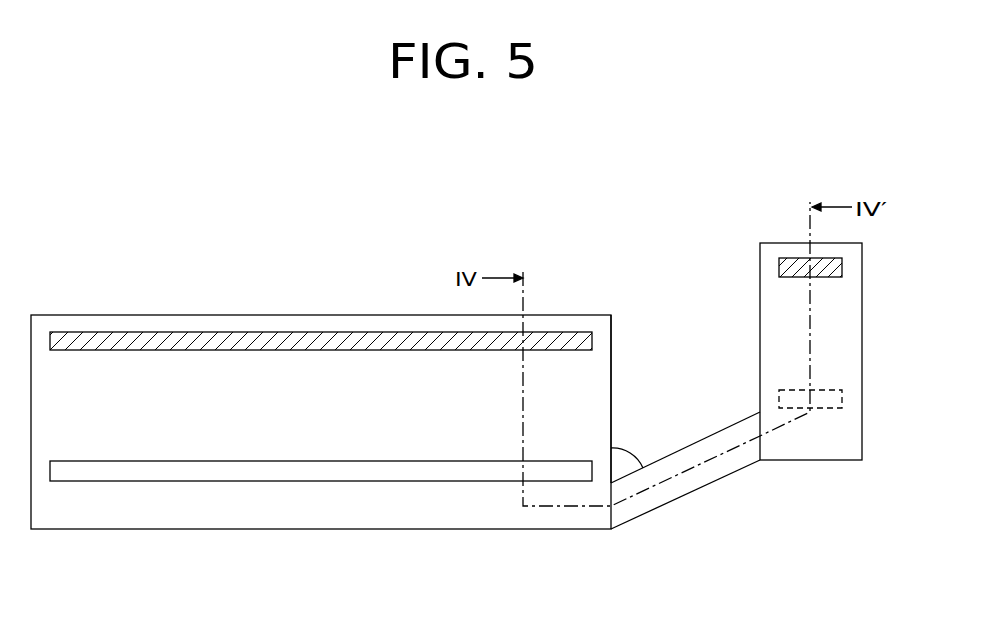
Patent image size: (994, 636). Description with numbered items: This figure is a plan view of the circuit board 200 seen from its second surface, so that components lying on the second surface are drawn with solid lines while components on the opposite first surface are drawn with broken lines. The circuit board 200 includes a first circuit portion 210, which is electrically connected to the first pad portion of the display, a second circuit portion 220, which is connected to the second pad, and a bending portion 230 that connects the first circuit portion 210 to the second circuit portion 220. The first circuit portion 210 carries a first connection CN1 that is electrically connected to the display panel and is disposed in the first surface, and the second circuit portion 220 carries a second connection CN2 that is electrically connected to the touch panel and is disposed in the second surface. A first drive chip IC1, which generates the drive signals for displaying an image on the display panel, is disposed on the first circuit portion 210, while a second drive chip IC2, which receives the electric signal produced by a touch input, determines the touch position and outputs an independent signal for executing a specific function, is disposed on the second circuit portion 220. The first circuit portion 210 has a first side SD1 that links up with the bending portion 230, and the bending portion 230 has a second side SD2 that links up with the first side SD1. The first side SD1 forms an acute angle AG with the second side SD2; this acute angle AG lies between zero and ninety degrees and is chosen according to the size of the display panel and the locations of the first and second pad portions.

The circuit board 200 is at (592, 251).
The first circuit portion 210 is at (416, 520).
The second circuit portion 220 is at (790, 450).
The bending portion 230 is at (692, 491).
The first connection CN1 is at (335, 331).
The second connection CN2 is at (790, 258).
The first drive chip IC1 is at (328, 470).
The second drive chip IC2 is at (835, 408).
The first side SD1 is at (612, 355).
The second side SD2 is at (710, 433).
The acute angle AG is at (624, 452).